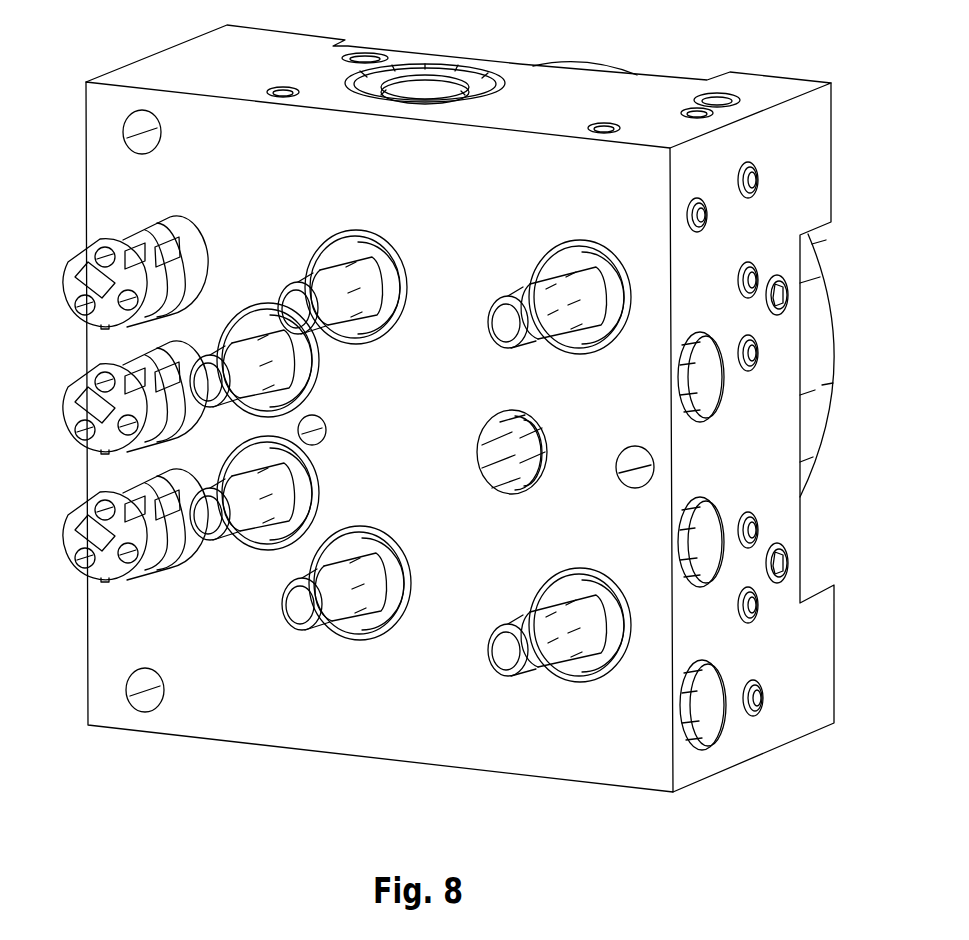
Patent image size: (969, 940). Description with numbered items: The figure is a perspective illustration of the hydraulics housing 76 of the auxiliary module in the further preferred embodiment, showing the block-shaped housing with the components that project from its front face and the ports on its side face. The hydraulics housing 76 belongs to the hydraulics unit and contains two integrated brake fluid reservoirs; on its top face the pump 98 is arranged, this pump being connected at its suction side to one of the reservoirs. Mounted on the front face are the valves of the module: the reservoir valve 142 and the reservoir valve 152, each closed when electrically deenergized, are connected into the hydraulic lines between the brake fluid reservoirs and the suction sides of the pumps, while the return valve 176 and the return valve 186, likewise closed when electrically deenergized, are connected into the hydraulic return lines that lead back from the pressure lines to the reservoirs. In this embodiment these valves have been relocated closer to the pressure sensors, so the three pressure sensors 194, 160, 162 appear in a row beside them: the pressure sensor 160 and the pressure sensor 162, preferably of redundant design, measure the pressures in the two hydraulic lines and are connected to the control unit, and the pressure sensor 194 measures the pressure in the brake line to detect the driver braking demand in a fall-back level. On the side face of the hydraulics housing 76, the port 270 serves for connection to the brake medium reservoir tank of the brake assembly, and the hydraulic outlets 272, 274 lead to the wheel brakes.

The hydraulics housing 76 is at (803, 173).
The pump 98 is at (428, 78).
The reservoir valve 142 is at (297, 607).
The reservoir valve 152 is at (347, 275).
The pressure sensor 160 is at (72, 405).
The pressure sensor 162 is at (70, 537).
The return valve 176 is at (212, 520).
The return valve 186 is at (258, 345).
The pressure sensor 194 is at (72, 287).
The port 270 is at (695, 718).
The hydraulic outlet 272 is at (695, 553).
The hydraulic outlet 274 is at (700, 395).